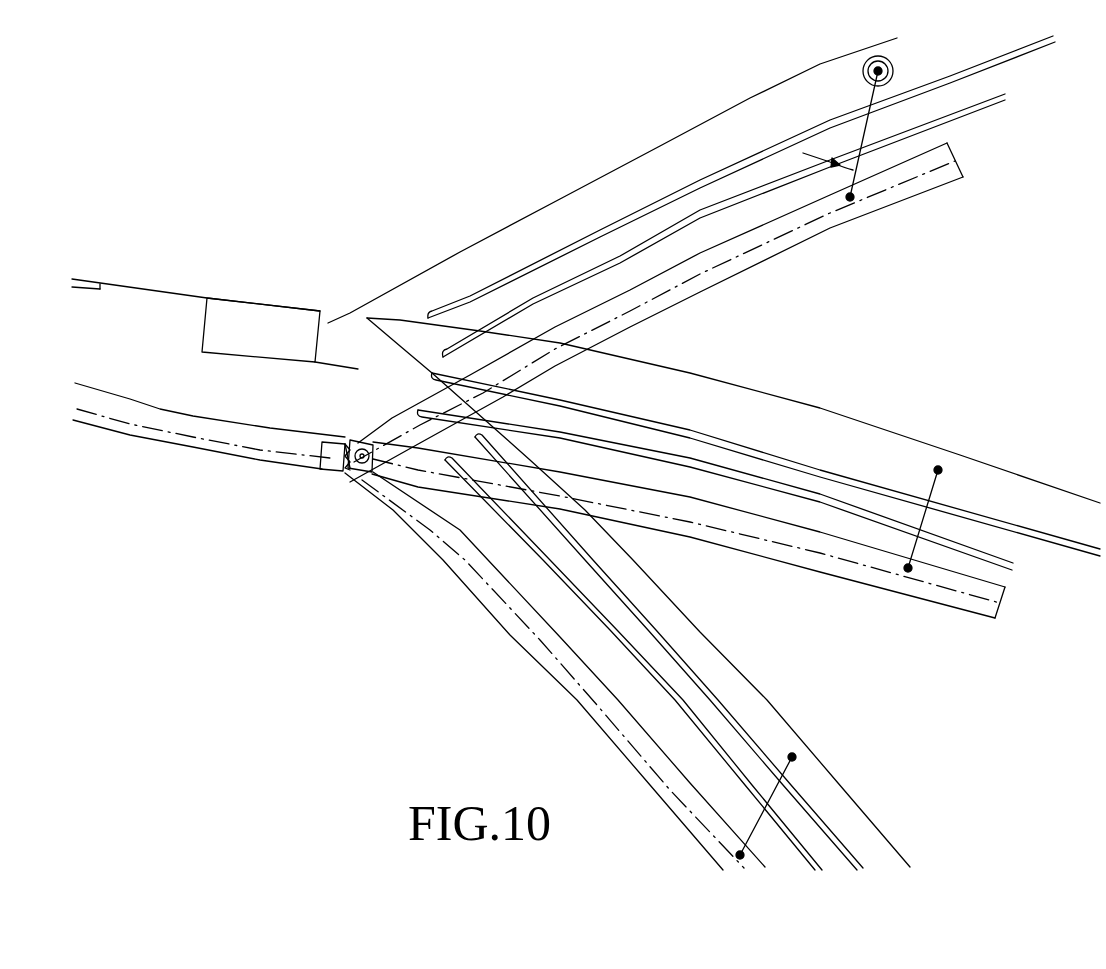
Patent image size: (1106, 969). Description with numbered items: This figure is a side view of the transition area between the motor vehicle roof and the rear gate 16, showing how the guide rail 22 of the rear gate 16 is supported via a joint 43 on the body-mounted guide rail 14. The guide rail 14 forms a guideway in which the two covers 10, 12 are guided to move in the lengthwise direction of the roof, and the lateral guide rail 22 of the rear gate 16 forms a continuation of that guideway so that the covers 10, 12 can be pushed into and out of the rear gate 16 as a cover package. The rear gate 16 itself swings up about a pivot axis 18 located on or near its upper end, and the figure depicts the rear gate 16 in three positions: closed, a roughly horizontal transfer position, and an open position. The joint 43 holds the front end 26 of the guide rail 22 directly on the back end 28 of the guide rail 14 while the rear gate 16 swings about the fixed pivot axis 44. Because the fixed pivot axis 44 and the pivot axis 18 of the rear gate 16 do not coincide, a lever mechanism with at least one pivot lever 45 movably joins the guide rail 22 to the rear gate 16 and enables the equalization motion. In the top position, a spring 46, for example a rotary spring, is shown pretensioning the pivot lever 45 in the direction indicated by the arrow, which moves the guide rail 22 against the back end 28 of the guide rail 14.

The cover 10 is at (815, 503).
The cover 12 is at (830, 471).
The guide rail 14 is at (165, 444).
The rear gate 16 is at (542, 194).
The pivot axis 18 is at (356, 352).
The guide rail 22 is at (507, 618).
The front end 26 is at (375, 478).
The back end 28 is at (330, 479).
The joint 43 is at (345, 486).
The fixed pivot axis 44 is at (350, 440).
The pivot lever 45 is at (865, 120).
The spring 46 is at (893, 64).